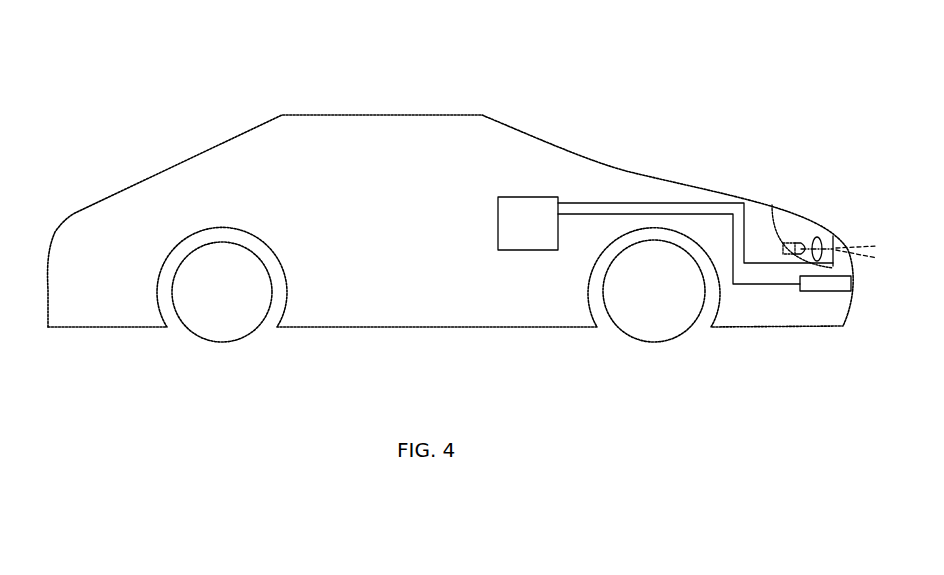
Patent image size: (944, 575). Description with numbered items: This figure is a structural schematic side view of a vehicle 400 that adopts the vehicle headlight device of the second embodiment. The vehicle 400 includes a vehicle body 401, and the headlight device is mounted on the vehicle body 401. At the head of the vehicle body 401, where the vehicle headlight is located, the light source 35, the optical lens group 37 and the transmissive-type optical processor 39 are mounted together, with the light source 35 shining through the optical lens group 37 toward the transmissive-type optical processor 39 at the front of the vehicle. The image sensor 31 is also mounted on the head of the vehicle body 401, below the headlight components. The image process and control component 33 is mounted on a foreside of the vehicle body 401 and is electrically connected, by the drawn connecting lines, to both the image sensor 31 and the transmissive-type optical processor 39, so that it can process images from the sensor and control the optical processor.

The vehicle 400 is at (453, 48).
The vehicle body 401 is at (313, 125).
The image process and control component 33 is at (529, 236).
The image sensor 31 is at (818, 291).
The light source 35 is at (785, 242).
The optical lens group 37 is at (812, 237).
The transmissive-type optical processor 39 is at (836, 240).